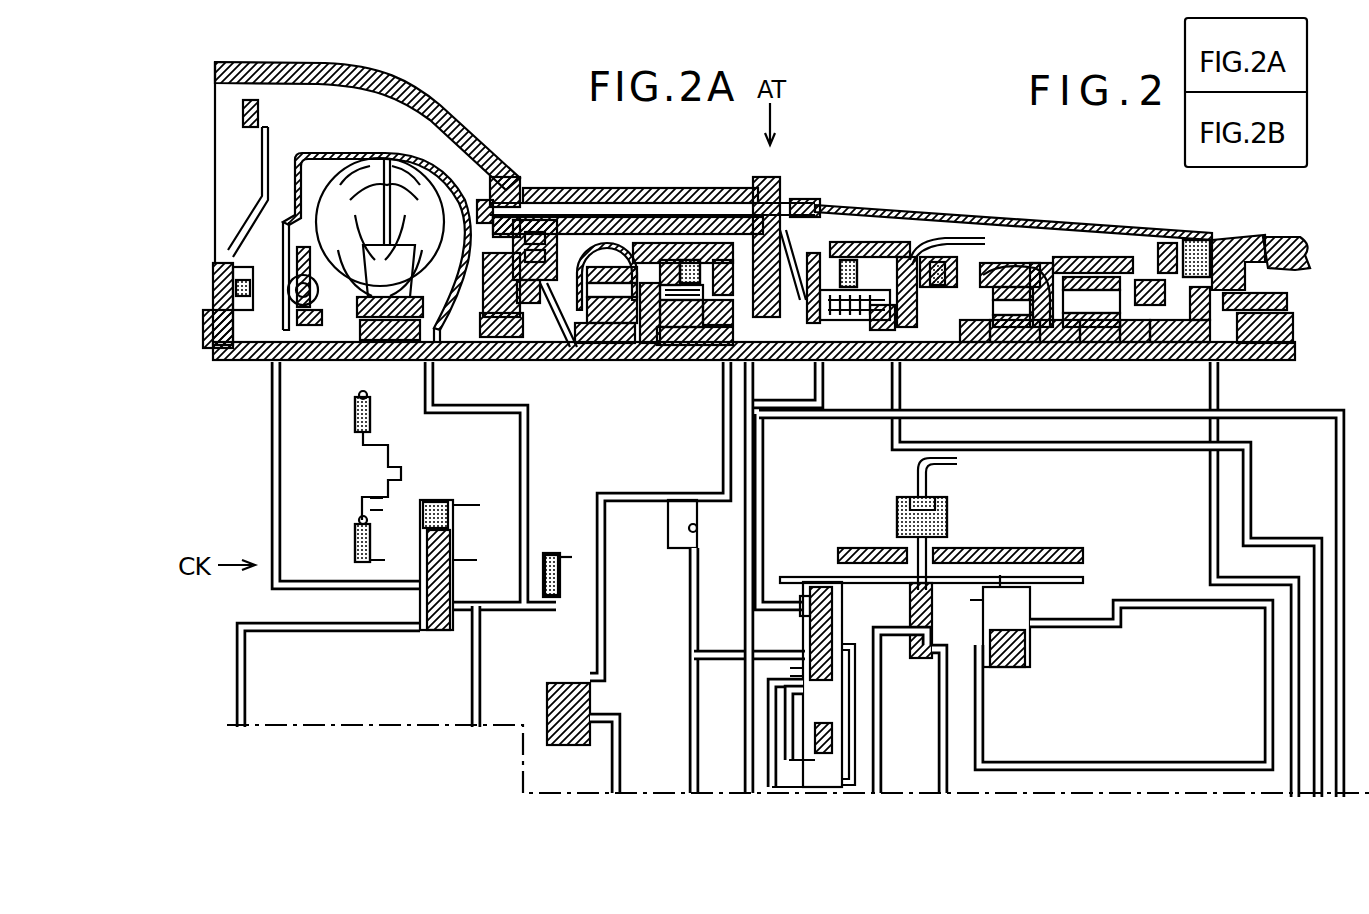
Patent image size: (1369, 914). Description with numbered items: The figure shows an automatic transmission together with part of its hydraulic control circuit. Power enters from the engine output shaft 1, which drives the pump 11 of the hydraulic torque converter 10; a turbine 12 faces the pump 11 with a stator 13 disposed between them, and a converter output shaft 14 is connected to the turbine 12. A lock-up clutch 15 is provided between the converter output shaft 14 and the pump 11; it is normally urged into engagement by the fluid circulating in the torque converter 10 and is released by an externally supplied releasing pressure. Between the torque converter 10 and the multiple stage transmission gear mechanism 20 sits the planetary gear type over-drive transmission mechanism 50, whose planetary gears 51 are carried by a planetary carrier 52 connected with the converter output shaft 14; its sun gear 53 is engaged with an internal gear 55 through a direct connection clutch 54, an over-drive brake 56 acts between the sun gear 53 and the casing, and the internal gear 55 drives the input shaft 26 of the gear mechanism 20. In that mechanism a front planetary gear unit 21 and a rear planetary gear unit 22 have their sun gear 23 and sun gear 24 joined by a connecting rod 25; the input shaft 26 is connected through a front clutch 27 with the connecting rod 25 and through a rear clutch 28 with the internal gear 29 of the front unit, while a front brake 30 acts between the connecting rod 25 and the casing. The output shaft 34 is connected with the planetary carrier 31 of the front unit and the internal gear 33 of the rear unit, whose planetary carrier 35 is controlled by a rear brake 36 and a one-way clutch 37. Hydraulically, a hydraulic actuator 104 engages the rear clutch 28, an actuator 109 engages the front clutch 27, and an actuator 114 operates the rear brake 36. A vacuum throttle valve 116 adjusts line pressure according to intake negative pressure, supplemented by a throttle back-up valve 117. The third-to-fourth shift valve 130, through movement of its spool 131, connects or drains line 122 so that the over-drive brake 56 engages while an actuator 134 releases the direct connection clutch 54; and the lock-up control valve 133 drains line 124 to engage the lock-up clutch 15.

The engine output shaft 1 is at (235, 368).
The hydraulic torque converter 10 is at (472, 160).
The pump 11 is at (480, 180).
The turbine 12 is at (335, 175).
The stator 13 is at (405, 255).
The converter output shaft 14 is at (325, 372).
The lock-up clutch 15 is at (262, 196).
The multiple stage transmission gear mechanism 20 is at (985, 262).
The front planetary gear unit 21 is at (1015, 262).
The rear planetary gear unit 22 is at (1100, 275).
The sun gear 23 is at (1005, 345).
The sun gear 24 is at (1085, 345).
The connecting rod 25 is at (1045, 345).
The input shaft 26 is at (862, 340).
The front clutch 27 is at (855, 240).
The rear clutch 28 is at (940, 255).
The internal gear 29 is at (1045, 262).
The front brake 30 is at (890, 240).
The planetary carrier 31 is at (968, 345).
The internal gear 33 is at (1165, 243).
The output shaft 34 is at (1125, 345).
The planetary carrier 35 is at (1075, 256).
The rear brake 36 is at (1200, 240).
The one-way clutch 37 is at (1170, 345).
The planetary gear type over-drive transmission mechanism 50 is at (648, 243).
The planetary gears 51 is at (568, 230).
The planetary carrier 52 is at (645, 345).
The sun gear 53 is at (583, 345).
The direct connection clutch 54 is at (720, 258).
The internal gear 55 is at (590, 265).
The over-drive brake 56 is at (688, 260).
The hydraulic actuator 104 is at (915, 345).
The actuator 109 is at (752, 345).
The actuator 114 is at (1232, 345).
The vacuum throttle valve 116 is at (968, 576).
The throttle back-up valve 117 is at (1035, 612).
The line 122 is at (728, 640).
The line 124 is at (285, 490).
The 3-4 shift valve 130 is at (805, 560).
The spool 131 is at (850, 692).
The lock-up control valve 133 is at (452, 498).
The actuator 134 is at (700, 345).